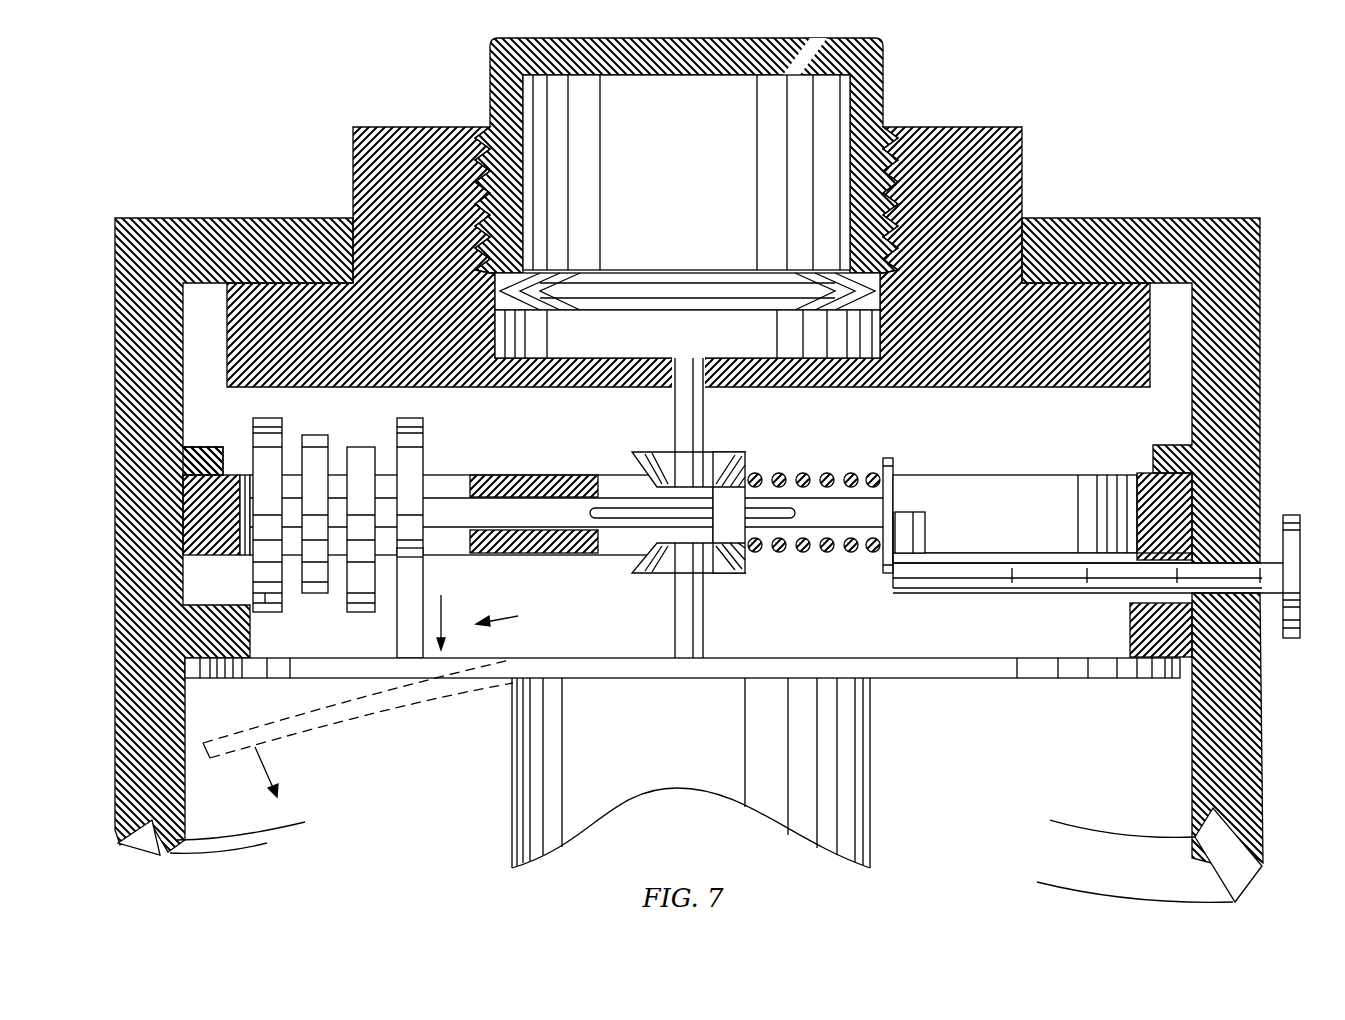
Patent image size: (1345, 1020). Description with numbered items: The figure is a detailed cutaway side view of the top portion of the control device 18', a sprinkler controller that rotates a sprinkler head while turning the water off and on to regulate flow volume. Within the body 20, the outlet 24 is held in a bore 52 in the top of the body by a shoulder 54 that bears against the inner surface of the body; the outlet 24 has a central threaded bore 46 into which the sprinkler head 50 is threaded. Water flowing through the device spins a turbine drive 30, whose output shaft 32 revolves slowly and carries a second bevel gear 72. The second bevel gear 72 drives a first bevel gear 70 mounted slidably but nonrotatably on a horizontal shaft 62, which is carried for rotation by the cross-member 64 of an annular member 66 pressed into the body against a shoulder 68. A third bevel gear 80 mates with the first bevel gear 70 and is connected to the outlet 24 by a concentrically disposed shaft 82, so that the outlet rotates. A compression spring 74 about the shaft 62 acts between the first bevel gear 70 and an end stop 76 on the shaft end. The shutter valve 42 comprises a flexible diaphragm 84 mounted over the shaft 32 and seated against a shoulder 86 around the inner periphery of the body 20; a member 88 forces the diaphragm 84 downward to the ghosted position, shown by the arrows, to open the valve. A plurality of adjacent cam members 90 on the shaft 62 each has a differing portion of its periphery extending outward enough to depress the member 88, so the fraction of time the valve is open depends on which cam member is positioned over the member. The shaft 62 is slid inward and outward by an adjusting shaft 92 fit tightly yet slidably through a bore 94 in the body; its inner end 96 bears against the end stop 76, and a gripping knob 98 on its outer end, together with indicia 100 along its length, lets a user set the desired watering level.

The control device 18' is at (1238, 110).
The body 20 is at (1082, 794).
The outlet 24 is at (1005, 160).
The turbine drive 30 is at (512, 812).
The output shaft 32 is at (683, 610).
The shutter valve 42 is at (492, 620).
The threaded bore 46 is at (520, 222).
The sprinkler head 50 is at (488, 78).
The bore 52 is at (353, 215).
The shoulder 54 is at (220, 303).
The shaft 62 is at (492, 508).
The cross-member 64 is at (557, 473).
The annular member 66 is at (205, 555).
The shoulder 68 is at (205, 449).
The first bevel gear 70 is at (730, 537).
The second bevel gear 72 is at (662, 565).
The compression spring 74 is at (825, 473).
The end stop 76 is at (887, 557).
The third bevel gear 80 is at (713, 458).
The shaft 82 is at (683, 407).
The flexible diaphragm 84 is at (275, 670).
The shoulder 86 is at (1167, 672).
The member 88 is at (417, 582).
The cam members 90 is at (365, 457).
The adjusting shaft 92 is at (990, 572).
The bore 94 is at (1260, 668).
The inner end 96 is at (923, 533).
The gripping knob 98 is at (1290, 515).
The indicia 100 is at (1087, 585).